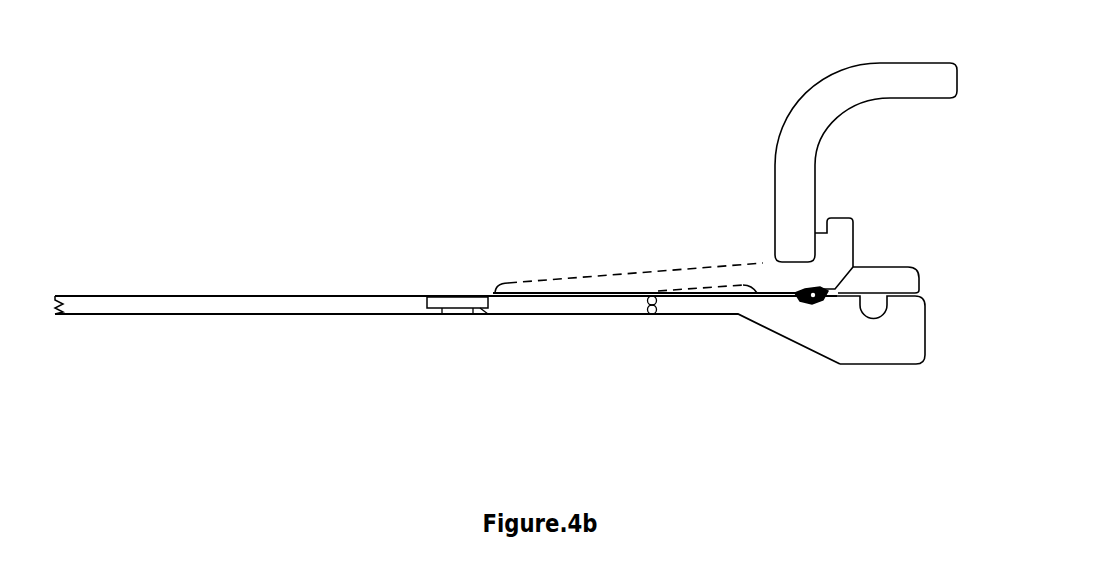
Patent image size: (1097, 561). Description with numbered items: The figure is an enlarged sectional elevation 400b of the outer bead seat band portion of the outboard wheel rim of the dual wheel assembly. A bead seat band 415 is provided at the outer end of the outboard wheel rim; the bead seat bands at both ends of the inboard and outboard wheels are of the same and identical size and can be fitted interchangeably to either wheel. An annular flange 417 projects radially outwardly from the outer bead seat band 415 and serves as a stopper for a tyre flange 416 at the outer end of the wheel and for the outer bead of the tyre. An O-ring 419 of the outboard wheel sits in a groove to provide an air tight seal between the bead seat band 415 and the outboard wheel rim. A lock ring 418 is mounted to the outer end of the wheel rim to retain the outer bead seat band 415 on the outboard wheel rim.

The enlarged sectional elevation 400b is at (176, 80).
The bead seat band 415 is at (725, 275).
The tyre flange 416 is at (812, 138).
The annular flange 417 is at (838, 232).
The lock ring 418 is at (888, 277).
The O-ring 419 is at (810, 298).